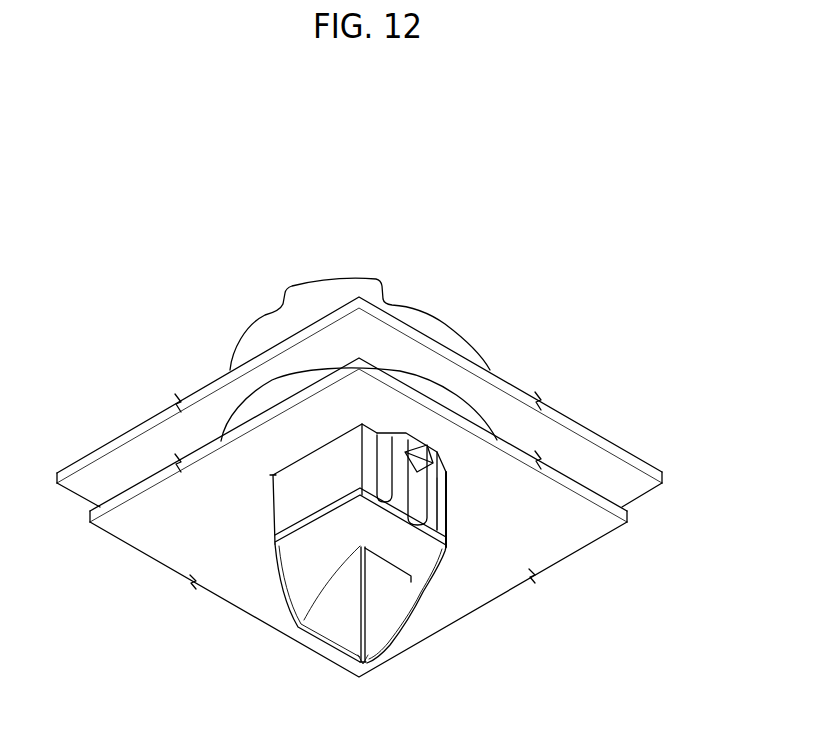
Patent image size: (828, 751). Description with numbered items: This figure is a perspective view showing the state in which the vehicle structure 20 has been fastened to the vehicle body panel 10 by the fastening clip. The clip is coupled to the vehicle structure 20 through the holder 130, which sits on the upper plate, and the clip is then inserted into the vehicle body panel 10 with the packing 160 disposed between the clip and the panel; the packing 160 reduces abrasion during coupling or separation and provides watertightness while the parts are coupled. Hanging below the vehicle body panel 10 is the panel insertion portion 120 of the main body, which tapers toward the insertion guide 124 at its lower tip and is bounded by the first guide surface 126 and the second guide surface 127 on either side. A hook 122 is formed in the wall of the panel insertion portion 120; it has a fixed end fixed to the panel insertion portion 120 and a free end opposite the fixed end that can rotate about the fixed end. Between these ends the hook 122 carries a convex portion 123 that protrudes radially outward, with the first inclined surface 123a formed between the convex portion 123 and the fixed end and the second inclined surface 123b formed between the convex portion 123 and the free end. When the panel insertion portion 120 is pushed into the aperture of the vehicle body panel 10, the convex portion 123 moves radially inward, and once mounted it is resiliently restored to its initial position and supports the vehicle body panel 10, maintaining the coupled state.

The vehicle body panel 10 is at (597, 528).
The vehicle structure 20 is at (630, 483).
The panel insertion portion 120 is at (247, 530).
The hook 122 is at (437, 487).
The convex portion 123 is at (437, 449).
The first inclined surface 123a is at (446, 493).
The second inclined surface 123b is at (388, 433).
The insertion guide 124 is at (374, 660).
The first guide surface 126 is at (427, 602).
The second guide surface 127 is at (289, 590).
The holder 130 is at (257, 302).
The packing 160 is at (251, 410).